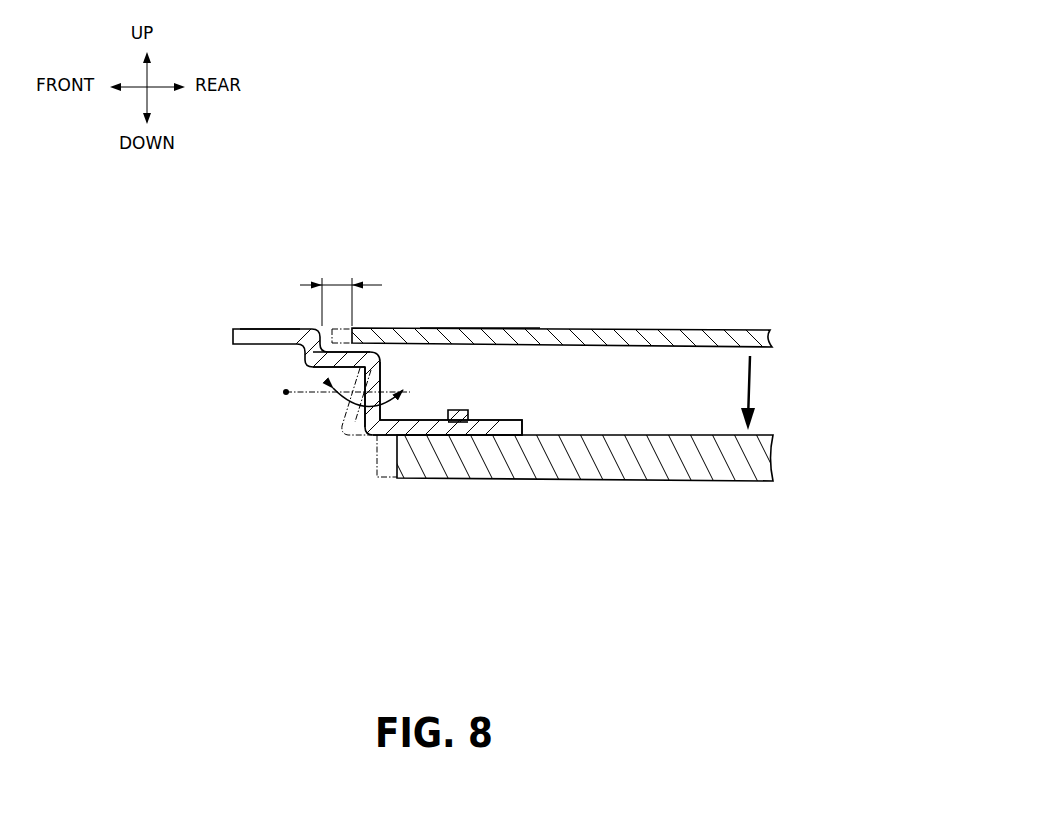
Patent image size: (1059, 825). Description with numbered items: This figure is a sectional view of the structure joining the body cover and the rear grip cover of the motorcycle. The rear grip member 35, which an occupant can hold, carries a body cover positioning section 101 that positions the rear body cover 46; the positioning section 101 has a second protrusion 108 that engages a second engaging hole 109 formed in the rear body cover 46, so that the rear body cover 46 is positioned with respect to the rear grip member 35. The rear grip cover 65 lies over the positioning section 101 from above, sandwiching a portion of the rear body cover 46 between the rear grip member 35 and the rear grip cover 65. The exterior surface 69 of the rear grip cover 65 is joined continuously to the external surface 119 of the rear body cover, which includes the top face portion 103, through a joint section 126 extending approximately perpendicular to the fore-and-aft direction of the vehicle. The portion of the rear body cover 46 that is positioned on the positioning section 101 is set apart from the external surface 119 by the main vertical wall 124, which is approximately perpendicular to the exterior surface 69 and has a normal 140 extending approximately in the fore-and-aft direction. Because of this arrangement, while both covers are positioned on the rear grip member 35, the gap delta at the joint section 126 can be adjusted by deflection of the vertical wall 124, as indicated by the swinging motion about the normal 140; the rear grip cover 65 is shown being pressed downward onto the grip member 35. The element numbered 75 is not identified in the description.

The rear grip member 35 is at (674, 484).
The rear body cover 46 is at (234, 324).
The rear grip cover 65 is at (726, 312).
The exterior surface of the rear grip cover 69 is at (482, 327).
The upper panel 75 is at (550, 328).
The body cover positioning section 101 is at (451, 392).
The top face portion 103 is at (287, 327).
The second protrusion 108 is at (461, 419).
The second engaging hole 109 is at (458, 423).
The external surface of the rear body cover 119 is at (256, 324).
The main vertical wall 124 is at (381, 372).
The joint section 126 is at (338, 240).
The normal 140 is at (286, 395).